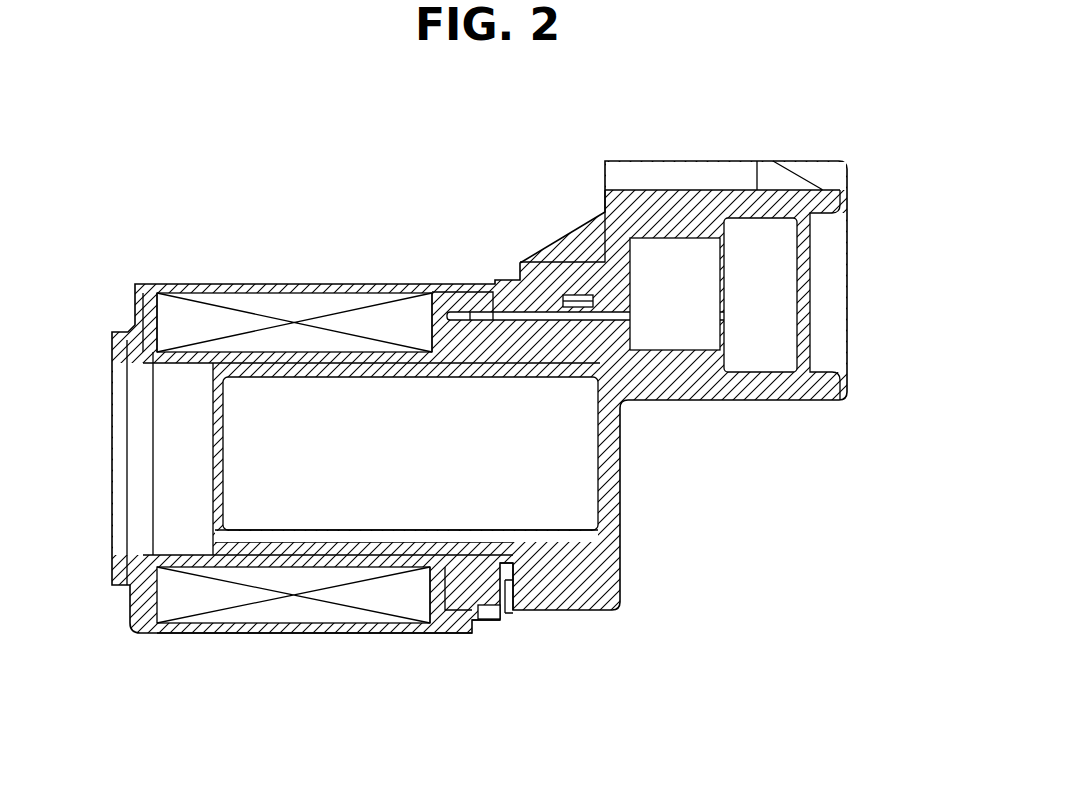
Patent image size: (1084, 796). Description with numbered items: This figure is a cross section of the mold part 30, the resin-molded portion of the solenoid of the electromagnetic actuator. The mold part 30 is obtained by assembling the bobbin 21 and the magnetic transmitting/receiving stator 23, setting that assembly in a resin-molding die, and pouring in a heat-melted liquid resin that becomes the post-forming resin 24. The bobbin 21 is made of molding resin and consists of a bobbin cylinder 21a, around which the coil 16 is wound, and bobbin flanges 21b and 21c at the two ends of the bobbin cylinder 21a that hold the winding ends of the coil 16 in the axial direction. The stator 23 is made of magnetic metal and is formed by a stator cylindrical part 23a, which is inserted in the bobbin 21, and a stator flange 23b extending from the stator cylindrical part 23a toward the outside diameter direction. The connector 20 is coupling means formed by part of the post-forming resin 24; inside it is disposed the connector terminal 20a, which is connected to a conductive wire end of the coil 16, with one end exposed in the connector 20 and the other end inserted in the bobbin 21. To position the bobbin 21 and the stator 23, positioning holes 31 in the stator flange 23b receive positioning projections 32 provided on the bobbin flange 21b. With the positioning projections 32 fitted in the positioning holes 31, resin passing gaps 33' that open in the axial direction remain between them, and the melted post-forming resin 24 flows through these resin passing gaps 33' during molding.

The mold part 30 is at (105, 263).
The connector 20 is at (812, 176).
The connector terminal 20a is at (770, 315).
The post-forming resin 24 is at (545, 288).
The bobbin 21 is at (437, 211).
The bobbin cylinder 21a is at (305, 330).
The bobbin flange 21b is at (425, 345).
The bobbin flange 21c is at (172, 300).
The coil 16 is at (220, 600).
The stator 23 is at (497, 695).
The stator cylindrical part 23a is at (392, 597).
The stator flange 23b is at (485, 633).
The positioning hole 31 is at (498, 615).
The positioning projection 32 is at (513, 597).
The resin passing gap 33' is at (600, 605).